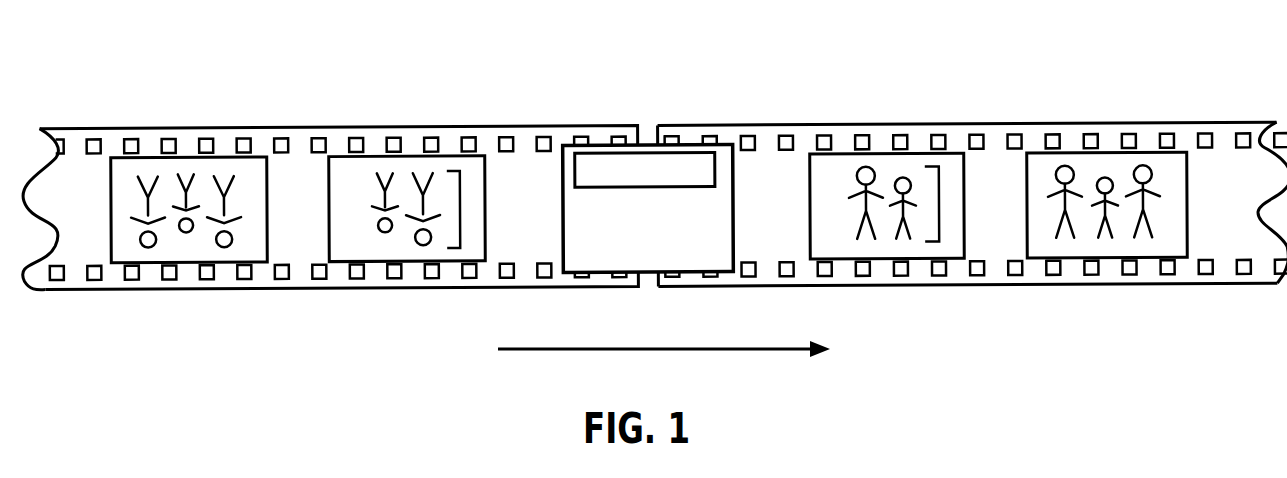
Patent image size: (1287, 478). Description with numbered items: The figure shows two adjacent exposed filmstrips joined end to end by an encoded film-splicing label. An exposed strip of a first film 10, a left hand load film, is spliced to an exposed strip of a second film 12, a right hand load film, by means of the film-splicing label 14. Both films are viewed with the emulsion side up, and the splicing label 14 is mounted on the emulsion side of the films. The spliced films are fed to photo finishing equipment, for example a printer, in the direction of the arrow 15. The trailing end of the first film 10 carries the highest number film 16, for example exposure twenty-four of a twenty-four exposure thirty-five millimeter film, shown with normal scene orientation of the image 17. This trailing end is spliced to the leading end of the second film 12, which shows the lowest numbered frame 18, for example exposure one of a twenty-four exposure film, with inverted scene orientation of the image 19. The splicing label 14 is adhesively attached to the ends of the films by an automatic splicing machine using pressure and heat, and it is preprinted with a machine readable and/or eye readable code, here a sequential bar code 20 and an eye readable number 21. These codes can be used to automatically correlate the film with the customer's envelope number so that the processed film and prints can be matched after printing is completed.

The first film 10 is at (1047, 96).
The second film 12 is at (281, 104).
The film-splicing label 14 is at (563, 232).
The arrow 15 is at (573, 350).
The highest number film frame 16 is at (916, 153).
The image 17 is at (940, 199).
The lowest numbered frame 18 is at (378, 156).
The image 19 is at (460, 210).
The sequential bar code 20 is at (716, 175).
The eye readable number 21 is at (673, 215).